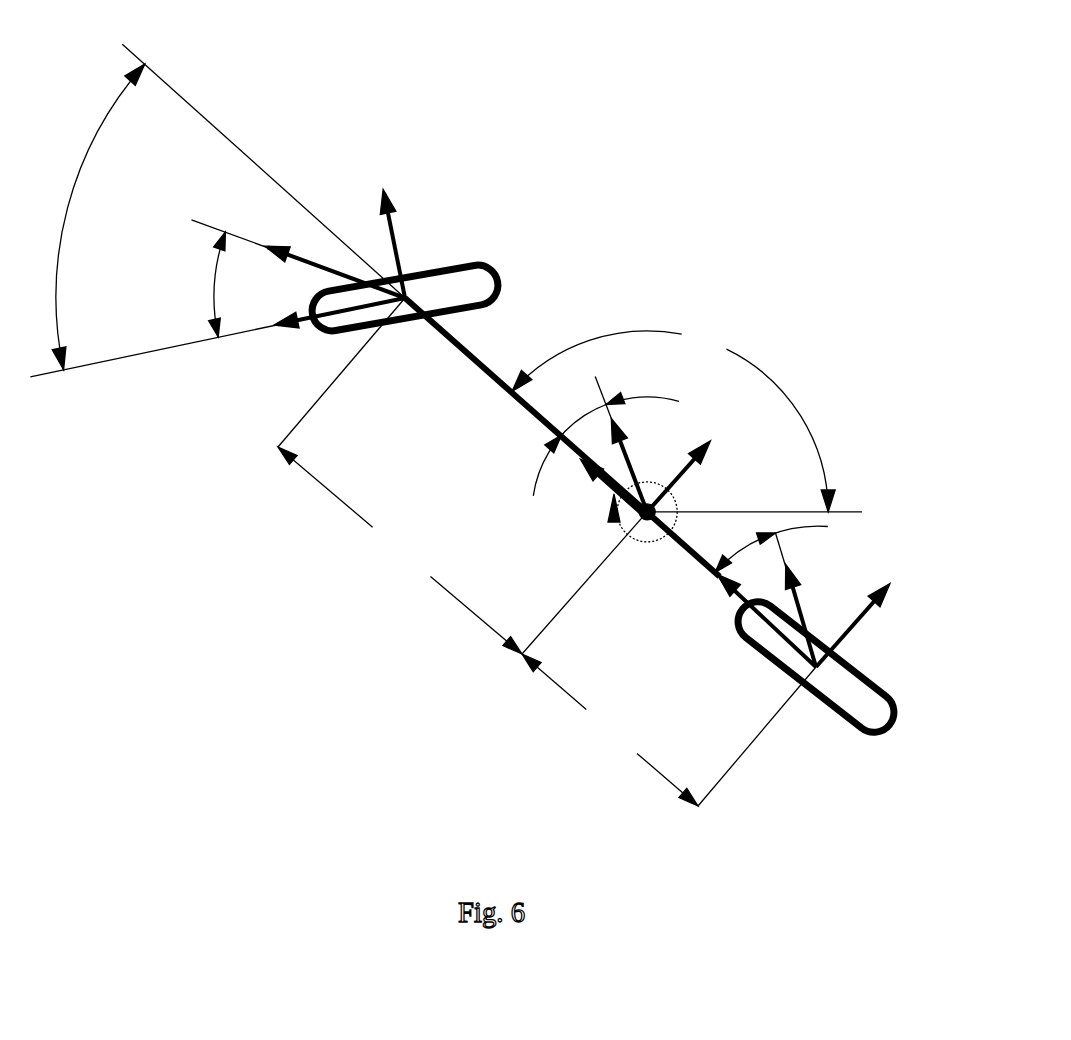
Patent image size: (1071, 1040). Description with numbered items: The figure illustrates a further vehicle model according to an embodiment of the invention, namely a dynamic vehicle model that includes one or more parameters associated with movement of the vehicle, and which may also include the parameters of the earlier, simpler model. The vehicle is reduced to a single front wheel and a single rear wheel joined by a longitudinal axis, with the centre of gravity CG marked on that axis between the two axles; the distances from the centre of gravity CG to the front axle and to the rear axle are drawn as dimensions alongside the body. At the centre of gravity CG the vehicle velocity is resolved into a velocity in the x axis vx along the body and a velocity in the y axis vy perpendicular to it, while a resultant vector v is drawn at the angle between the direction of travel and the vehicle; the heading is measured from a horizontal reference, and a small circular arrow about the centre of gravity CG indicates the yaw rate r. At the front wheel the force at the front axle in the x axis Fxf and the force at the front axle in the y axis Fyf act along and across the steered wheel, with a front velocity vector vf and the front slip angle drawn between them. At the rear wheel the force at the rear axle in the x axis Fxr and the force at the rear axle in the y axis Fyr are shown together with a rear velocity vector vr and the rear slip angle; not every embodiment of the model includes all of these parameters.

The front wheel velocity vf is at (299, 250).
The force at the front axle in the x axis Fxf is at (323, 342).
The force at the front axle in the y axis Fyf is at (405, 228).
The force at the rear axle in the x axis Fxr is at (747, 620).
The force at the rear axle in the y axis Fyr is at (876, 625).
The centre of gravity CG is at (644, 524).
The yaw rate r is at (635, 521).
The vehicle velocity v is at (621, 444).
The velocity in the x axis vx is at (598, 487).
The velocity in the y axis vy is at (692, 467).
The rear wheel velocity vr is at (805, 600).